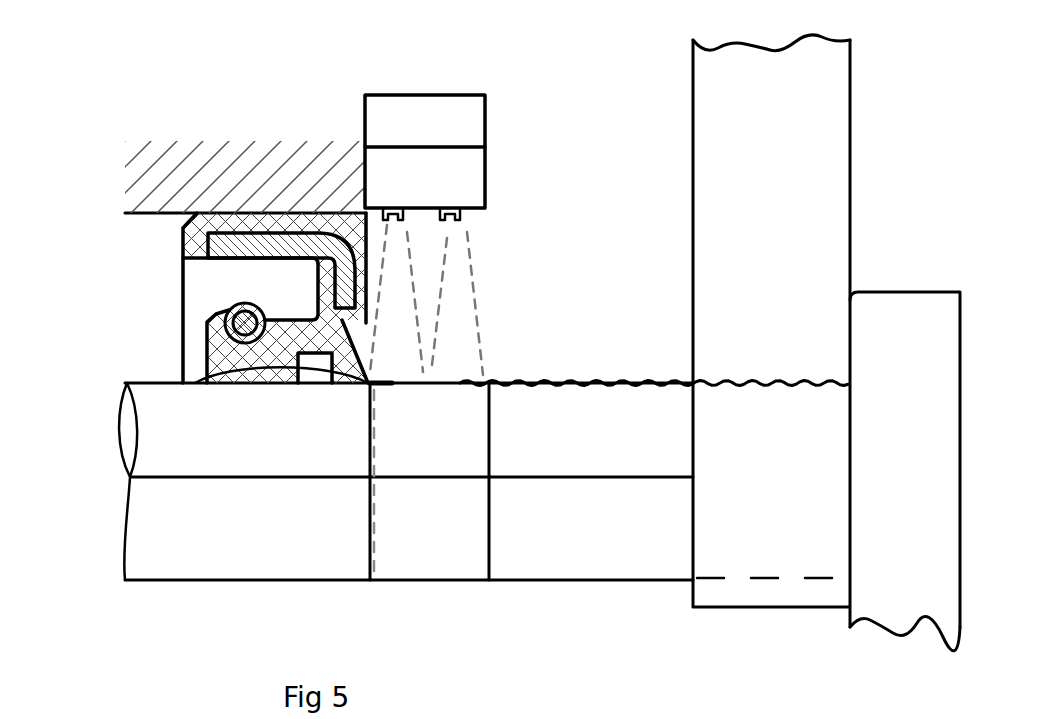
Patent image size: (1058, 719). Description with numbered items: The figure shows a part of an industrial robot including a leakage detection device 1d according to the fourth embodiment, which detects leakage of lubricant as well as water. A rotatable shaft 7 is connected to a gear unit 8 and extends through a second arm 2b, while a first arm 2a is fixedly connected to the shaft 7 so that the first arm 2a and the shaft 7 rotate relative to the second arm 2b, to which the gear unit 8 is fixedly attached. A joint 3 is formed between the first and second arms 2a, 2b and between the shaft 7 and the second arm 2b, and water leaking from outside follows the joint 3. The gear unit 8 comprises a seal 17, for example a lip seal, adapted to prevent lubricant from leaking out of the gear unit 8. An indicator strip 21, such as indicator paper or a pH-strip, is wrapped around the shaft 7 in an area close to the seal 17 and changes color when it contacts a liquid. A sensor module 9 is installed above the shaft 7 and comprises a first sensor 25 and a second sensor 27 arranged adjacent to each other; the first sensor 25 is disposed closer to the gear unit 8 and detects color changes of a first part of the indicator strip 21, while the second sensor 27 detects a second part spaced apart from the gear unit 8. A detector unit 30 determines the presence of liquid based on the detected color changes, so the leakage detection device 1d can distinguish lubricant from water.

The leakage detection device 1d is at (437, 64).
The first arm 2a is at (922, 292).
The second arm 2b is at (850, 112).
The robot joint 3 is at (745, 382).
The rotatable shaft 7 is at (118, 530).
The gear unit 8 is at (160, 178).
The sensor module 9 is at (488, 185).
The seal 17 is at (125, 383).
The indicator strip 21 is at (427, 558).
The first sensor 25 is at (457, 218).
The second sensor 27 is at (400, 215).
The detector unit 30 is at (365, 118).